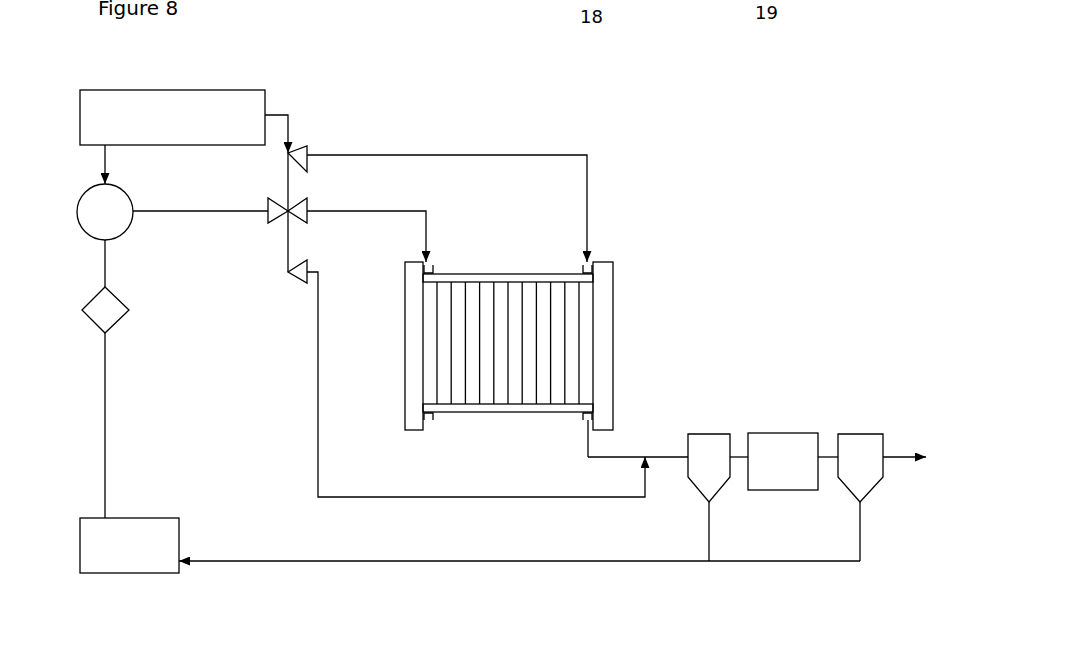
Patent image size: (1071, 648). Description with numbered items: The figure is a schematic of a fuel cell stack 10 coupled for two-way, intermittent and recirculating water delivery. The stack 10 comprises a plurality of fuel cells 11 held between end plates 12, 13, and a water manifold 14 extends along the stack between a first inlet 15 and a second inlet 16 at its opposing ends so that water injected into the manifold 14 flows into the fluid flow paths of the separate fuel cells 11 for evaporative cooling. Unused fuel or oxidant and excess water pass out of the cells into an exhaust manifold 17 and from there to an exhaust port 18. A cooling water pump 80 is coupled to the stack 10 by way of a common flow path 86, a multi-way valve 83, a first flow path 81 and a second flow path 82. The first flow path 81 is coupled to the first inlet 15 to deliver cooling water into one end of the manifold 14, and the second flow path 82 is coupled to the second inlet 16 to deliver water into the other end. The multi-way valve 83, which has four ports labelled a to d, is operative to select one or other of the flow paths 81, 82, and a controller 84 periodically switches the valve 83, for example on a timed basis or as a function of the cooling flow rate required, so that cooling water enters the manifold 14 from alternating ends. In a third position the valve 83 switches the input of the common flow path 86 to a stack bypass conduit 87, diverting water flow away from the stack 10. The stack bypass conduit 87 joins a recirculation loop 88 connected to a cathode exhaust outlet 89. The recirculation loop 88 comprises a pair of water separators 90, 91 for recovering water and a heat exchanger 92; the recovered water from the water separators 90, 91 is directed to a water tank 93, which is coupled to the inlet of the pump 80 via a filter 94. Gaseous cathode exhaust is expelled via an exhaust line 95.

The fuel cell stack 10 is at (500, 344).
The fuel cells 11 is at (493, 298).
The end plate 12 is at (415, 350).
The end plate 13 is at (605, 345).
The manifold 14 is at (480, 273).
The first inlet 15 is at (430, 235).
The second inlet 16 is at (590, 230).
The exhaust manifold 17 is at (528, 410).
The exhaust port 18 is at (432, 420).
The cooling water pump 80 is at (85, 235).
The first flow path 81 is at (367, 212).
The second flow path 82 is at (428, 155).
The multi-way valve 83 is at (287, 233).
The controller 84 is at (200, 88).
The common flow path 86 is at (162, 212).
The stack bypass conduit 87 is at (317, 393).
The recirculation loop 88 is at (622, 453).
The cathode exhaust outlet 89 is at (585, 420).
The water separator 90 is at (710, 433).
The water separator 91 is at (858, 433).
The heat exchanger 92 is at (778, 433).
The water tank 93 is at (120, 575).
The filter 94 is at (118, 297).
The exhaust line 95 is at (902, 460).